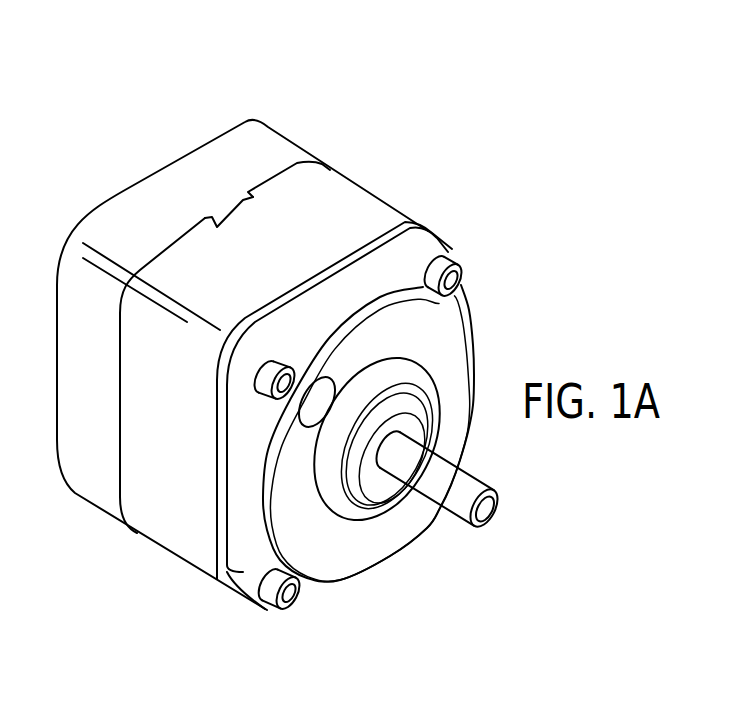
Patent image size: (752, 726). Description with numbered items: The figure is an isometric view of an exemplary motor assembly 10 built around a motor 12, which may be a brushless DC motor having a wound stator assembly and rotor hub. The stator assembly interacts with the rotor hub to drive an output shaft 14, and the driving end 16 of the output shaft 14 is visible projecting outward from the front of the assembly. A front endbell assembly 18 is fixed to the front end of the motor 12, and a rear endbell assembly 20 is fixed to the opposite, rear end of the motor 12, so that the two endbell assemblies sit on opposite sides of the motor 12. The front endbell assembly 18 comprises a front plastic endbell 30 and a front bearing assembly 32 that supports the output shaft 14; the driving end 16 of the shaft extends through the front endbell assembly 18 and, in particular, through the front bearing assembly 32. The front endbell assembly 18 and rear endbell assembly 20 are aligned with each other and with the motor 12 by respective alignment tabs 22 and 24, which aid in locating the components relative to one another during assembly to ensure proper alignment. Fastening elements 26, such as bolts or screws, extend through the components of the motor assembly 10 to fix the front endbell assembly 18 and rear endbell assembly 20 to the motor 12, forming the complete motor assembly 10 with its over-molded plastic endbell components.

The motor assembly 10 is at (332, 102).
The motor 12 is at (153, 513).
The output shaft 14 is at (430, 480).
The driving end 16 is at (485, 525).
The front endbell assembly 18 is at (428, 244).
The rear endbell assembly 20 is at (117, 213).
The alignment tab 22 is at (331, 283).
The alignment tab 24 is at (230, 207).
The fastening element 26 is at (288, 593).
The front plastic endbell 30 is at (240, 572).
The front bearing assembly 32 is at (372, 483).